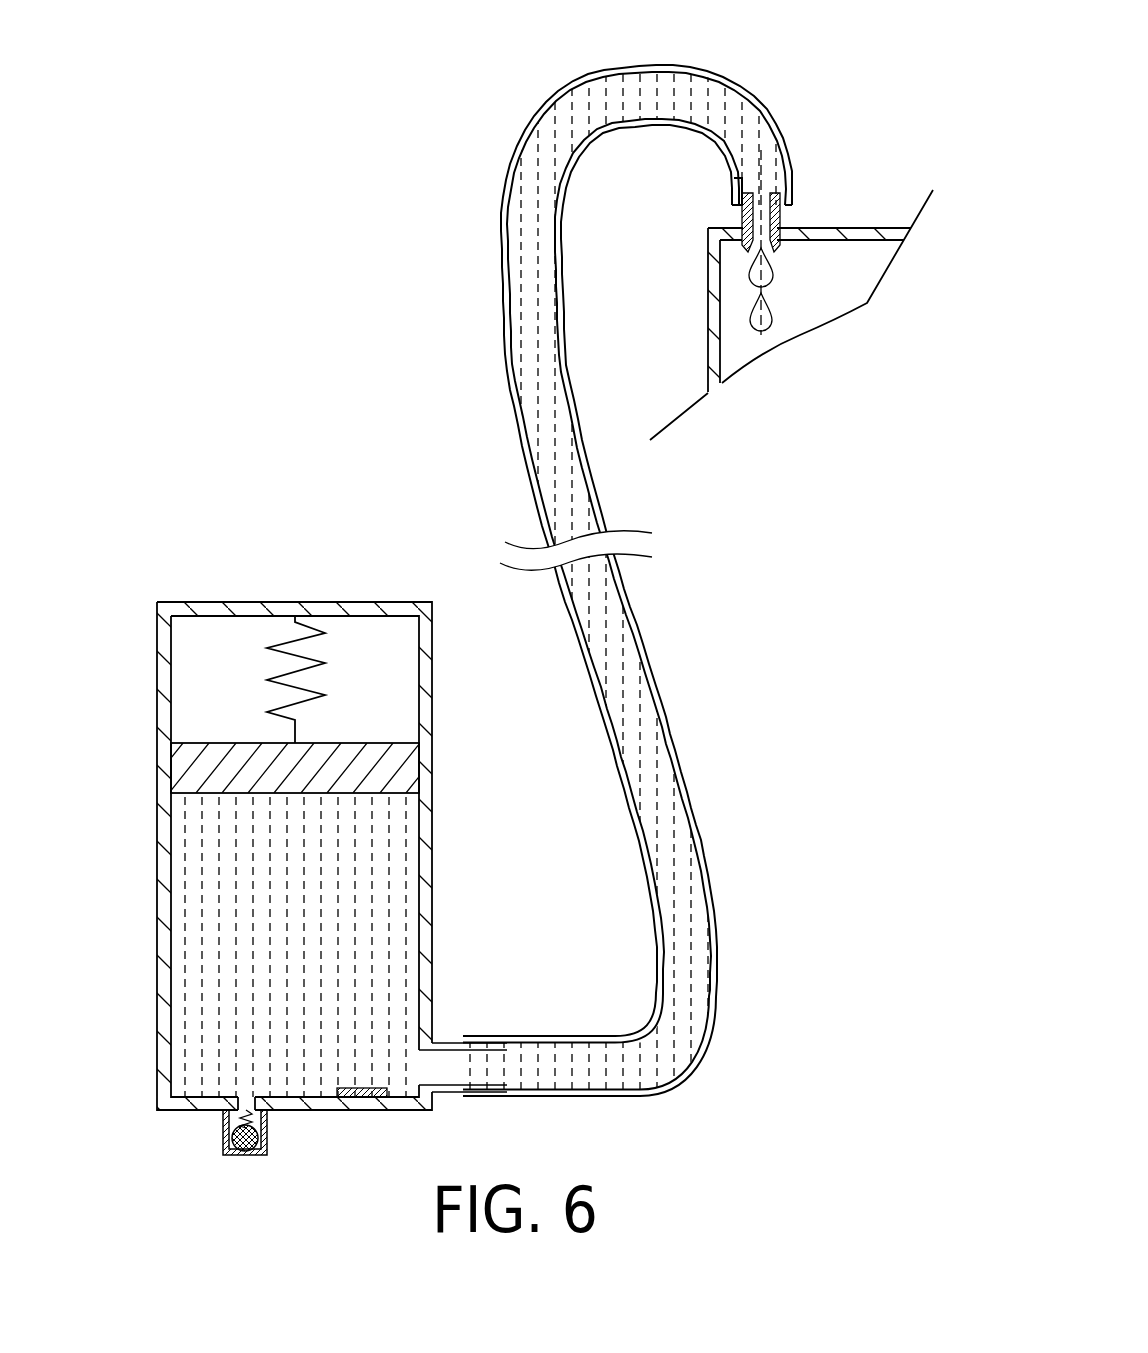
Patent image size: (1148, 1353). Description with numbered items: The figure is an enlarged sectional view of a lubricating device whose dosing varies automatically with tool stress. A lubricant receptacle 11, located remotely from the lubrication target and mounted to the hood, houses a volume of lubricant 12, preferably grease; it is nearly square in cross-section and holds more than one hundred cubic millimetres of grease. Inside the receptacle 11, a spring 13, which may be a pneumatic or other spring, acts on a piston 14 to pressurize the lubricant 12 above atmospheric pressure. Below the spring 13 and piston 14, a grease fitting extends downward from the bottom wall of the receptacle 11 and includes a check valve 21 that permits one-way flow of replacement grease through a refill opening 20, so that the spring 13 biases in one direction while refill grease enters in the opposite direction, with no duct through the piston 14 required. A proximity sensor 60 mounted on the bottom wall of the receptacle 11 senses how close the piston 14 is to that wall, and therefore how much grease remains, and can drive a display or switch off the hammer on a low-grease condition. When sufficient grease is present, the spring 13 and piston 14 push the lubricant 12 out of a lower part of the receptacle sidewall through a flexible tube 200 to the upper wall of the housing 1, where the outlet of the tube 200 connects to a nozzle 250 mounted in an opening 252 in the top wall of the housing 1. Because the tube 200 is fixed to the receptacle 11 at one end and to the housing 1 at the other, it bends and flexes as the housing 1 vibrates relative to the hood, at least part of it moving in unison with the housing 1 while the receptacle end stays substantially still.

The housing 1 is at (843, 300).
The lubricant receptacle 11 is at (217, 586).
The lubricant 12 is at (318, 942).
The spring 13 is at (310, 688).
The piston 14 is at (410, 768).
The refill opening 20 is at (245, 1100).
The check valve 21 is at (246, 1155).
The proximity sensor 60 is at (348, 1110).
The flexible tube 200 is at (496, 357).
The nozzle 250 is at (733, 218).
The opening 252 is at (770, 253).